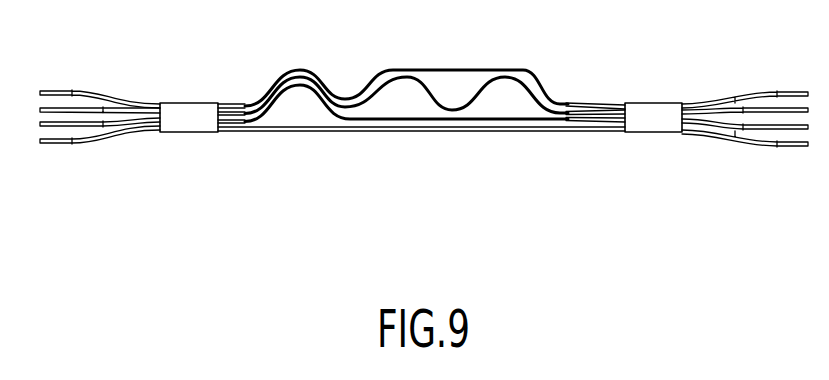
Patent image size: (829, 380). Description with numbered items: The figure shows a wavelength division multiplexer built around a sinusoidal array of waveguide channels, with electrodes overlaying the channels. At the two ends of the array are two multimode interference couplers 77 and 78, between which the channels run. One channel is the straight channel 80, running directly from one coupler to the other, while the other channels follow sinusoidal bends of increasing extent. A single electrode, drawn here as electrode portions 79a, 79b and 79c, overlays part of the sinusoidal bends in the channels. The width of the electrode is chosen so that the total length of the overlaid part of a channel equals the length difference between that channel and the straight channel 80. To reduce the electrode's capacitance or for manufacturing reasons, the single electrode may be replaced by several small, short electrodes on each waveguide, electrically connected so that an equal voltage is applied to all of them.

The MMI coupler 77 is at (185, 132).
The MMI coupler 78 is at (660, 132).
The electrode 79a is at (405, 119).
The electrode 79b is at (445, 105).
The electrode 79c is at (495, 70).
The straight channel 80 is at (305, 132).